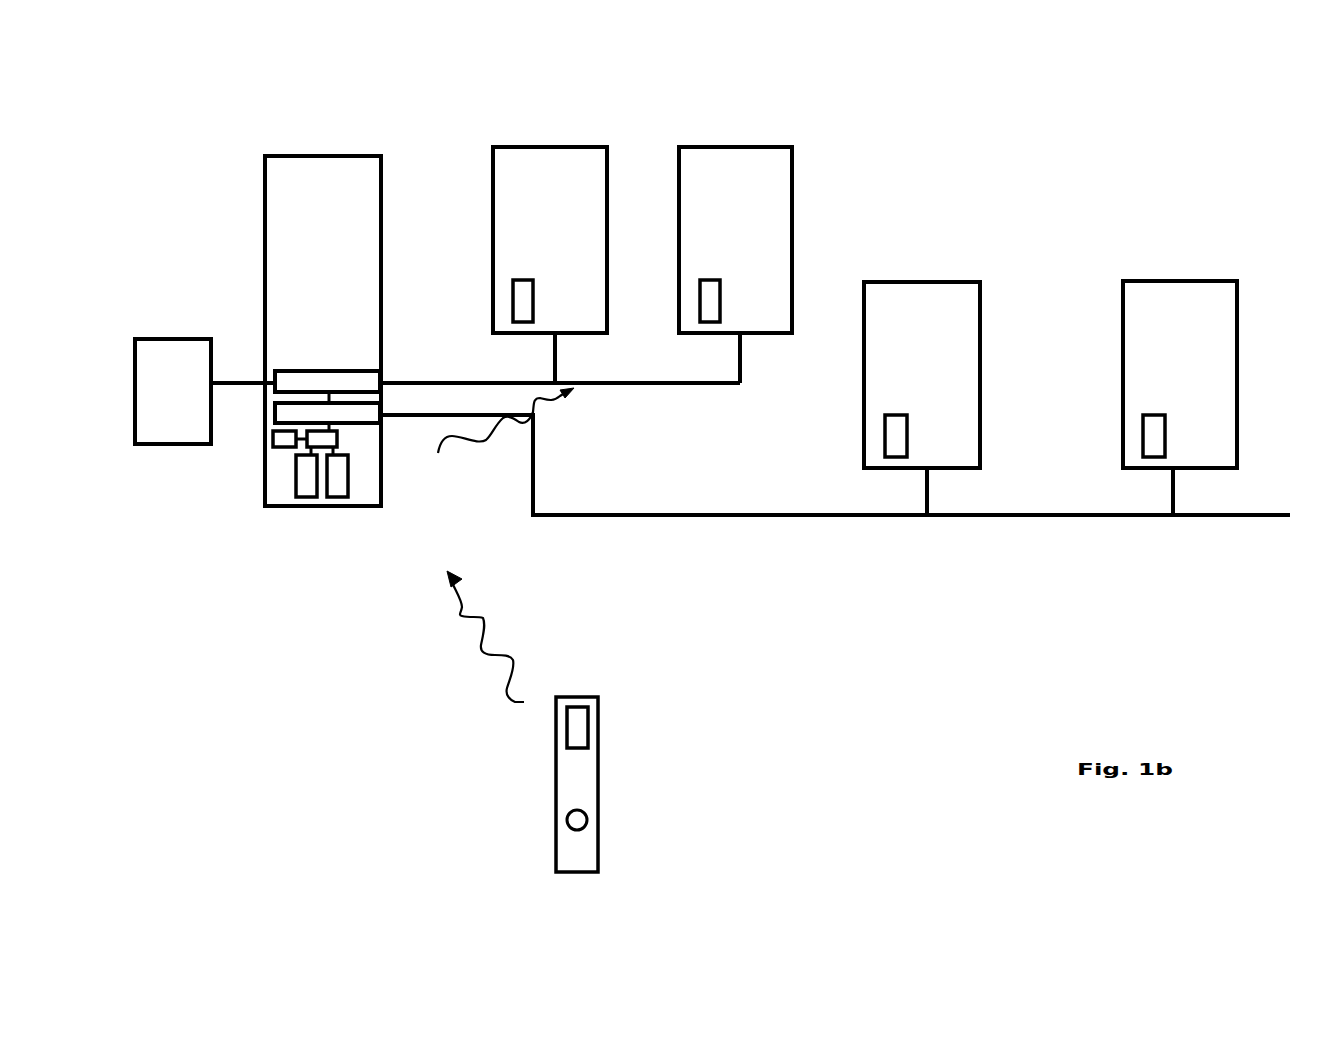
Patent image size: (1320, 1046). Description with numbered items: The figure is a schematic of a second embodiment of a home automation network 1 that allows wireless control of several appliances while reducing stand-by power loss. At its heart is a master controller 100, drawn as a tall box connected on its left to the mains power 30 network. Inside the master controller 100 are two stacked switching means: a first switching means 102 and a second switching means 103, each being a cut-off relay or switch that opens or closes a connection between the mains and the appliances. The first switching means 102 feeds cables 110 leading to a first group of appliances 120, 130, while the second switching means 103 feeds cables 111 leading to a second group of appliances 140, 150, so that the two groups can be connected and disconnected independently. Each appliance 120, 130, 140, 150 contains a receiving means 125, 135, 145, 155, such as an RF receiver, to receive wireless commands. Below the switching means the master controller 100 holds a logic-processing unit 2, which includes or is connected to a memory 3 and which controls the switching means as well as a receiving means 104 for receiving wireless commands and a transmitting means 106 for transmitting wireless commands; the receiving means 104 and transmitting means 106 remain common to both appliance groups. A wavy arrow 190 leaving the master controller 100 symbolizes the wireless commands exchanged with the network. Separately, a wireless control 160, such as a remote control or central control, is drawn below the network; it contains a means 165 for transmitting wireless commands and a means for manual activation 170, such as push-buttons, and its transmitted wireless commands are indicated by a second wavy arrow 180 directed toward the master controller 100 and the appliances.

The home automation network 1 is at (1078, 194).
The master controller 100 is at (338, 165).
The mains power network 30 is at (156, 339).
The first switching means 102 is at (283, 376).
The second switching means 103 is at (288, 413).
The memory 3 is at (272, 440).
The logic-processing unit 2 is at (345, 438).
The transmitting means 106 is at (303, 483).
The receiving means 104 is at (350, 493).
The cables 110 is at (652, 388).
The cables 111 is at (793, 518).
The wireless commands 190 is at (470, 442).
The appliance 120 is at (595, 158).
The receiving means 125 is at (522, 305).
The appliance 130 is at (780, 158).
The receiving means 135 is at (707, 307).
The appliance 140 is at (967, 307).
The receiving means 145 is at (893, 320).
The appliance 150 is at (1223, 327).
The receiving means 155 is at (1150, 448).
The wireless commands 180 is at (474, 648).
The wireless control 160 is at (590, 778).
The means for transmitting wireless commands 165 is at (582, 728).
The means for manual activation 170 is at (578, 823).